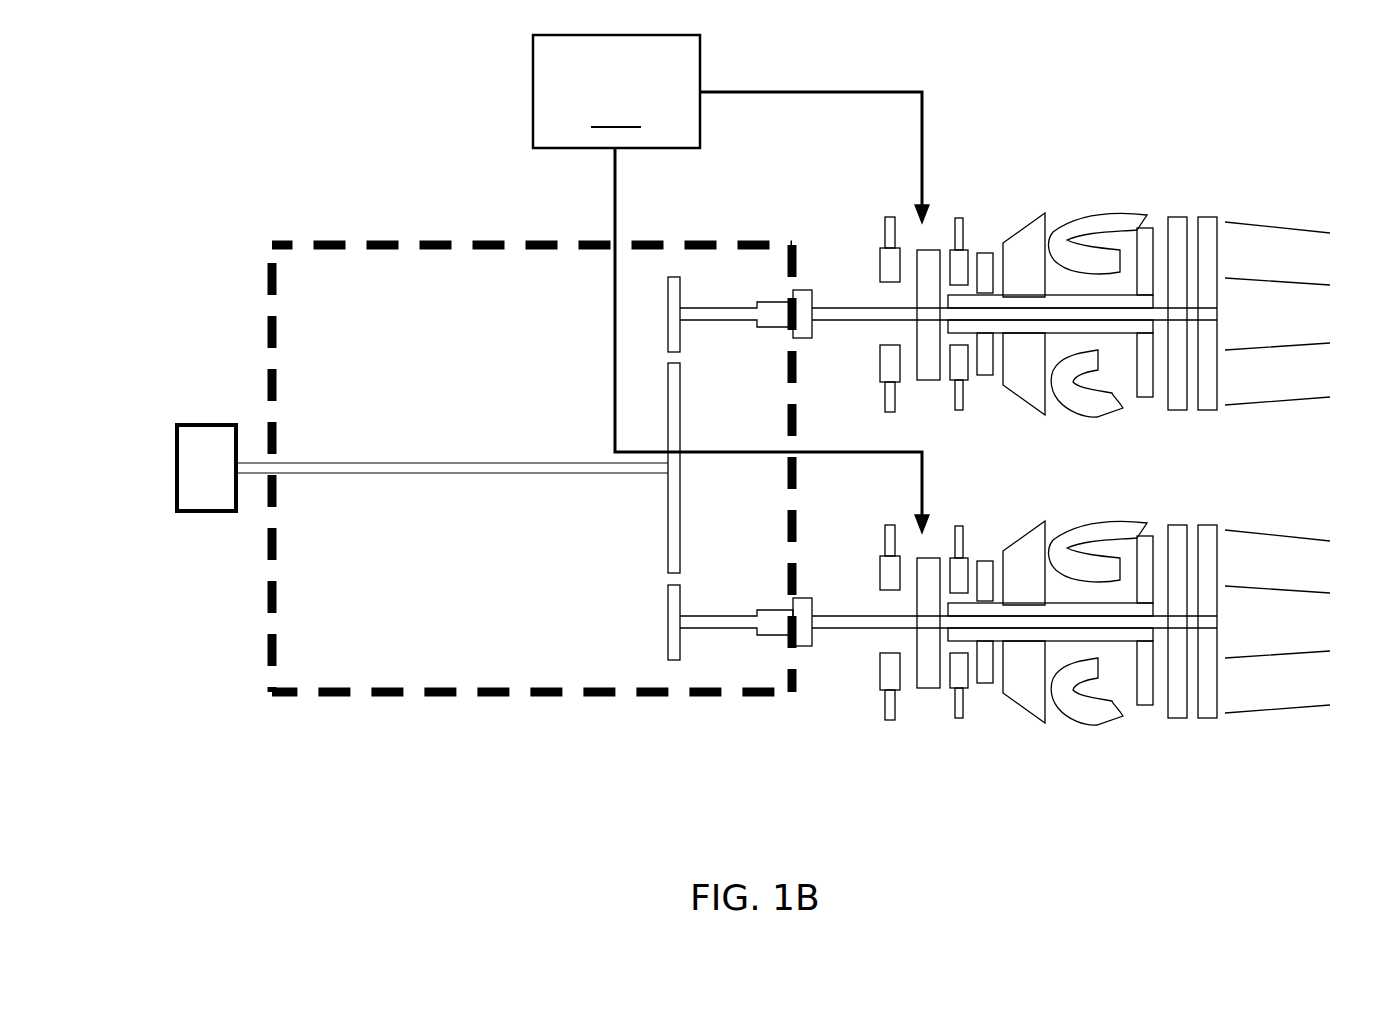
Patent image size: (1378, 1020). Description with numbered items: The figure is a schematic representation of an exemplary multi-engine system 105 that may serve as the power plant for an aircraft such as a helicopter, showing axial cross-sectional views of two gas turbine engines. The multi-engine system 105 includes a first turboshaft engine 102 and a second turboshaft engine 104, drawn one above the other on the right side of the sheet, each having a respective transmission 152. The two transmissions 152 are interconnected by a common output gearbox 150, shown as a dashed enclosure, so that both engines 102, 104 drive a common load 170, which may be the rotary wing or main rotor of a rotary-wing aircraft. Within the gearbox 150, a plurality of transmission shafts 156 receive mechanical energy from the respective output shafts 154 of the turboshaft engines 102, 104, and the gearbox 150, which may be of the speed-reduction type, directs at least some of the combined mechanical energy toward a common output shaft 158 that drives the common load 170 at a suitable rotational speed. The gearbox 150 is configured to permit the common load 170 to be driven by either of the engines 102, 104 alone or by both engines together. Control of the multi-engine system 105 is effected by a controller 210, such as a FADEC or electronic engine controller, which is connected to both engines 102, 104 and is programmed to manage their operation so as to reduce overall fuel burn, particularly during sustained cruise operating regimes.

The first turboshaft engine 102 is at (1143, 160).
The second turboshaft engine 104 is at (1141, 773).
The multi-engine system 105 is at (332, 160).
The common output gearbox 150 is at (490, 694).
The transmission 152 is at (768, 340).
The output shaft 154 is at (807, 422).
The transmission shaft 156 is at (720, 308).
The common output shaft 158 is at (257, 476).
The common load 170 is at (207, 423).
The controller 210 is at (731, 284).